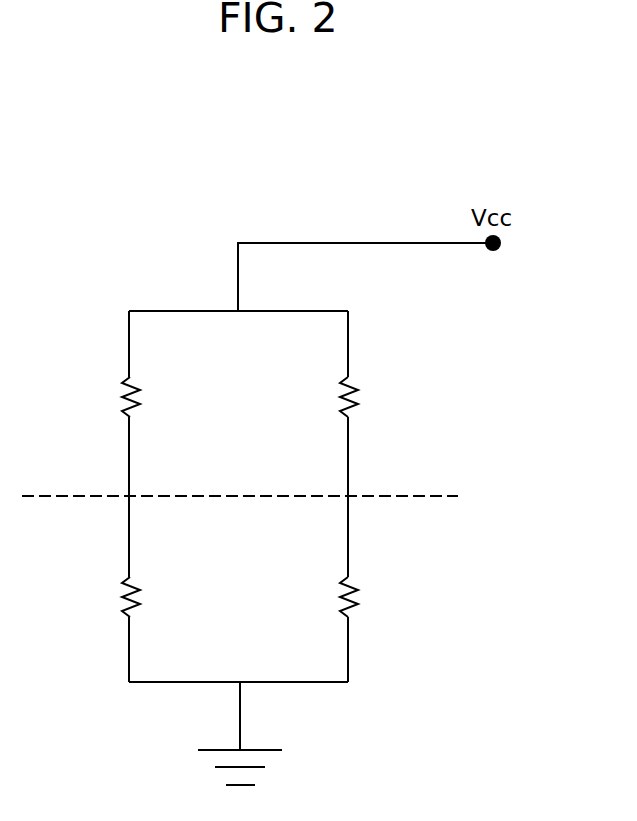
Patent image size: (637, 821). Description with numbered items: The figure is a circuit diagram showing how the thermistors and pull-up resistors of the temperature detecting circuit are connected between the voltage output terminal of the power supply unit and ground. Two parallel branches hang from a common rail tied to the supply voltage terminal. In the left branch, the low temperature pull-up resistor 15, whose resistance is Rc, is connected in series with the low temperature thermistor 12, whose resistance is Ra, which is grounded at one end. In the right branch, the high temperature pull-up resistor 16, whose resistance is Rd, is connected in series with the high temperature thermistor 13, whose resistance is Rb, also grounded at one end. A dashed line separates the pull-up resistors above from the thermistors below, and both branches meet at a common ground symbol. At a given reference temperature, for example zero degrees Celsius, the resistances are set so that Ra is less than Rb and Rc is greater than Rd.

The thermistor used for detecting low temperatures 12 is at (134, 575).
The thermistor for detecting high temperatures 13 is at (344, 578).
The pull-up resistor 15 is at (134, 375).
The pull-up resistor 16 is at (344, 378).